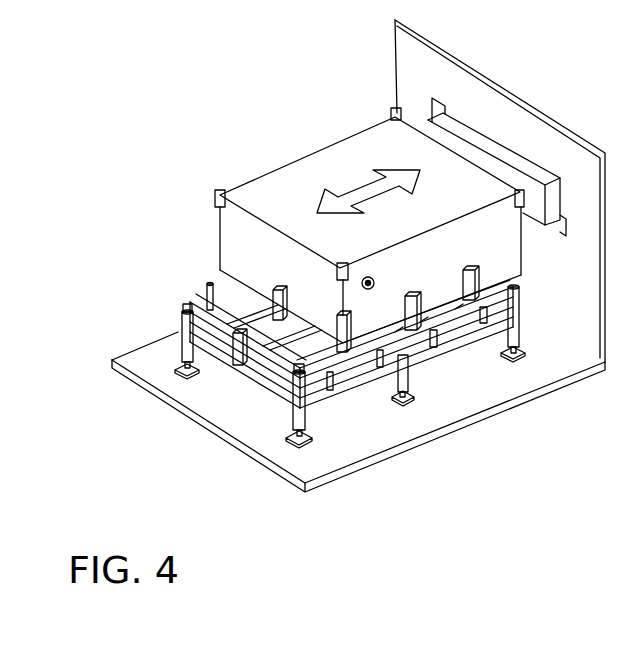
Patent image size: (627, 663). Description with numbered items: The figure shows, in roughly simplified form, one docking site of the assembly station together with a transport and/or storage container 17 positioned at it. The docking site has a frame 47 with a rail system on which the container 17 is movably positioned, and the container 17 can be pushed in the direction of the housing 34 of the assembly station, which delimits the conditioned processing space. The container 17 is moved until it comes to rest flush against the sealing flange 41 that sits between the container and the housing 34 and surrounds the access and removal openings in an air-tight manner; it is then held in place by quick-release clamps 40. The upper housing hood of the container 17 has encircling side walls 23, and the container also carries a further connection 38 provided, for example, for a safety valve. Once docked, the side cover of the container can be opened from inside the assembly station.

The transport and/or storage container 17 is at (329, 293).
The side wall 23 is at (242, 232).
The housing 34 is at (433, 80).
The connection for a safety valve 38 is at (372, 288).
The quick-release clamps 40 is at (272, 273).
The sealing flange 41 is at (490, 146).
The frame 47 is at (357, 417).